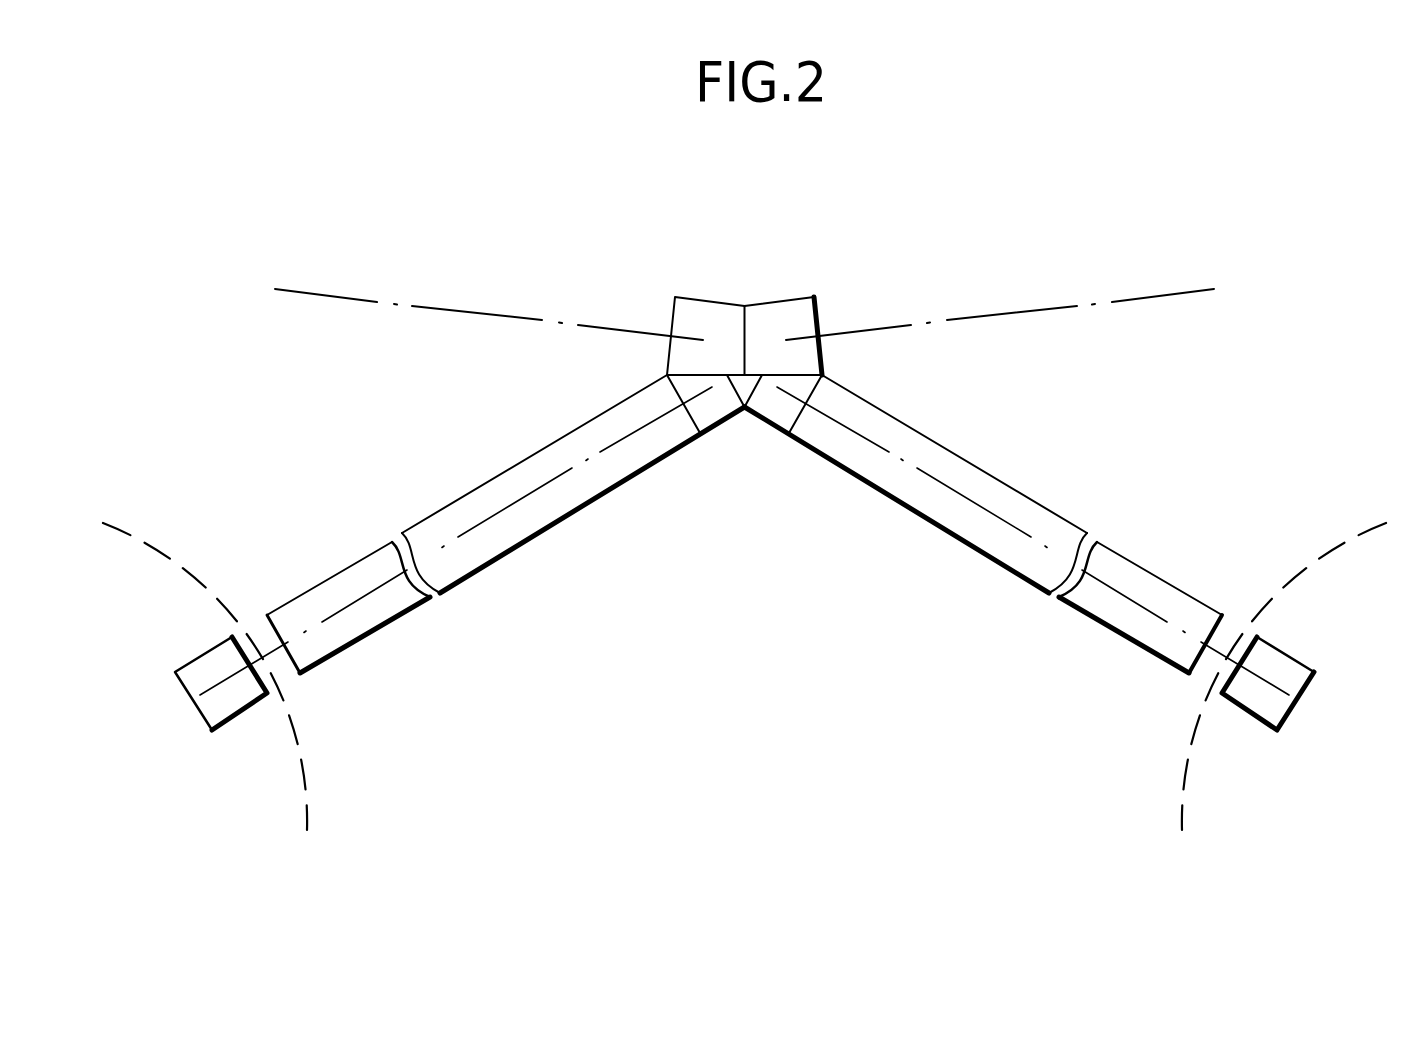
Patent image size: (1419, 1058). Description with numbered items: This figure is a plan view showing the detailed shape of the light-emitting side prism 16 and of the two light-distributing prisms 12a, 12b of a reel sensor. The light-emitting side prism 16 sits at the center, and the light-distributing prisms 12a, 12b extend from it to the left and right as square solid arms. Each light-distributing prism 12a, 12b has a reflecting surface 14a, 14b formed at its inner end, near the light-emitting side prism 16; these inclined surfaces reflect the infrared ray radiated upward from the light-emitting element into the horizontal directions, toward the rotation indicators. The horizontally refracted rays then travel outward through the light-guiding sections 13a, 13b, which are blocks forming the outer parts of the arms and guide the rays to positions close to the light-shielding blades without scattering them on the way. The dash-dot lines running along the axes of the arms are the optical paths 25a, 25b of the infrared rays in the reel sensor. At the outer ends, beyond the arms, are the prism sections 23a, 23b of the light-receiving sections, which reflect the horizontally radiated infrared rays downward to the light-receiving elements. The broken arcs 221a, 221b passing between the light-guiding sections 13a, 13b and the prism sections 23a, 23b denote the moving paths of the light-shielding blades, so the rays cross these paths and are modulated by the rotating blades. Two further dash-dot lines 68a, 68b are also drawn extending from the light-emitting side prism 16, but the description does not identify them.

The light-emitting side prism 16 is at (707, 297).
The reference line 68a is at (535, 320).
The reference line 68b is at (954, 320).
The light-distributing prism 12a is at (565, 520).
The light-distributing prism 12b is at (924, 520).
The light-guiding section 13a is at (497, 558).
The light-guiding section 13b is at (992, 558).
The reflecting surface 14a is at (725, 402).
The reflecting surface 14b is at (764, 405).
The optical path 25a is at (495, 515).
The optical path 25b is at (994, 515).
The prism section 23a is at (193, 712).
The prism section 23b is at (1296, 712).
The moving path of light-shielding blades 221a is at (303, 757).
The moving path of light-shielding blades 221b is at (1186, 757).